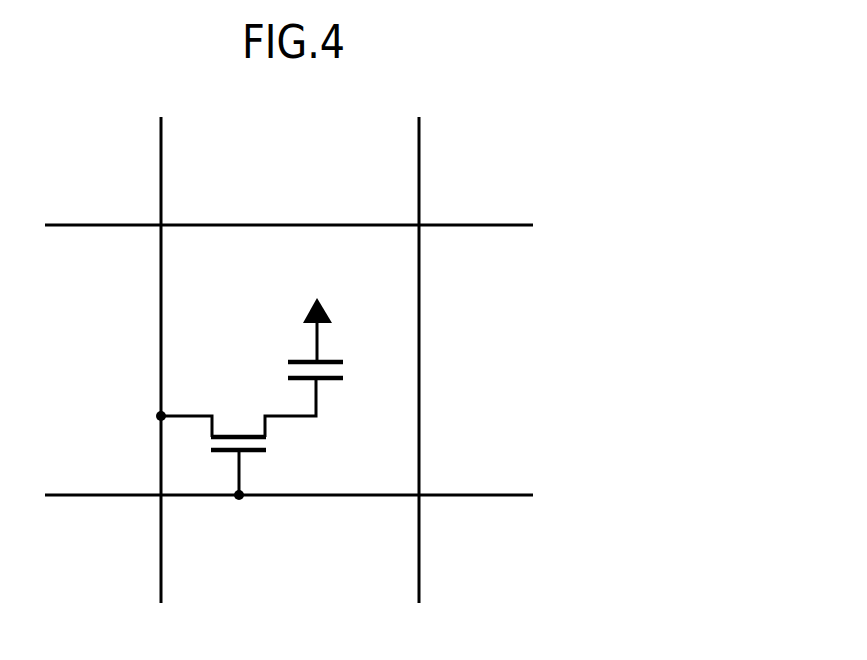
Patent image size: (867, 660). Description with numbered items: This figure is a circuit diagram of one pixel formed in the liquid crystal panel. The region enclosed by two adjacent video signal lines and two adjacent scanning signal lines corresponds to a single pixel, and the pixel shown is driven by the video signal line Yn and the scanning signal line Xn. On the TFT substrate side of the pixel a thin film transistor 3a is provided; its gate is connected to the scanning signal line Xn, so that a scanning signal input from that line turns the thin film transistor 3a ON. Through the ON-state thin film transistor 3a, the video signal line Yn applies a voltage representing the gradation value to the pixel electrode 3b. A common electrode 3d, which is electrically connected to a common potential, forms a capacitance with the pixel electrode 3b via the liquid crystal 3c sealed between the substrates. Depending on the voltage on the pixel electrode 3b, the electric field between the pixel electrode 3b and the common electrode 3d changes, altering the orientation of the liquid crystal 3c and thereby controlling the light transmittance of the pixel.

The thin film transistor 3a is at (262, 452).
The pixel electrode 3b is at (343, 380).
The liquid crystal 3c is at (383, 366).
The common electrode 3d is at (338, 361).
The video signal line Yn is at (162, 158).
The scanning signal line Xn is at (505, 497).